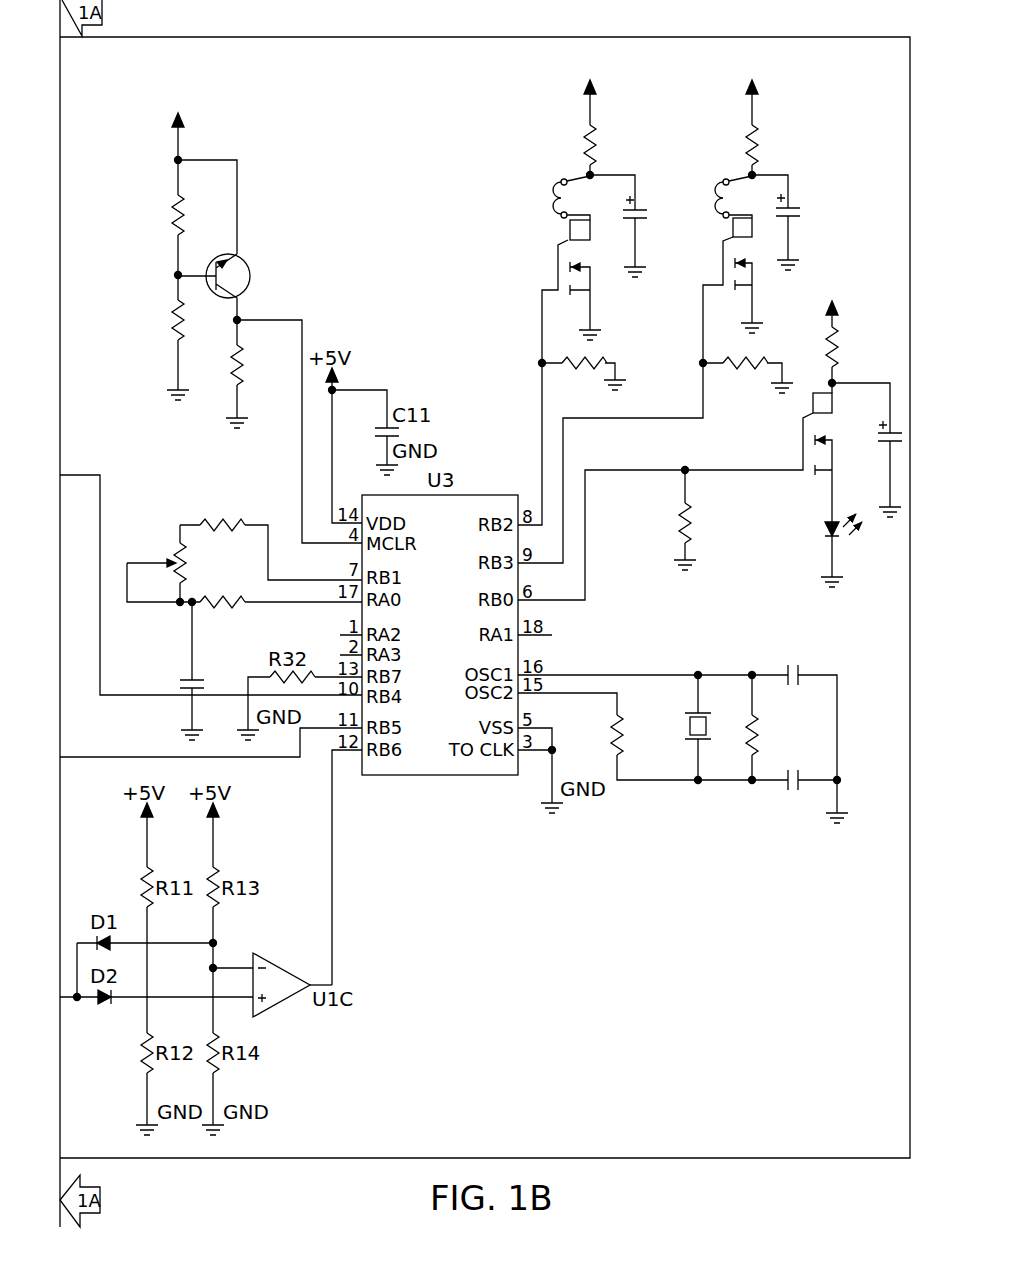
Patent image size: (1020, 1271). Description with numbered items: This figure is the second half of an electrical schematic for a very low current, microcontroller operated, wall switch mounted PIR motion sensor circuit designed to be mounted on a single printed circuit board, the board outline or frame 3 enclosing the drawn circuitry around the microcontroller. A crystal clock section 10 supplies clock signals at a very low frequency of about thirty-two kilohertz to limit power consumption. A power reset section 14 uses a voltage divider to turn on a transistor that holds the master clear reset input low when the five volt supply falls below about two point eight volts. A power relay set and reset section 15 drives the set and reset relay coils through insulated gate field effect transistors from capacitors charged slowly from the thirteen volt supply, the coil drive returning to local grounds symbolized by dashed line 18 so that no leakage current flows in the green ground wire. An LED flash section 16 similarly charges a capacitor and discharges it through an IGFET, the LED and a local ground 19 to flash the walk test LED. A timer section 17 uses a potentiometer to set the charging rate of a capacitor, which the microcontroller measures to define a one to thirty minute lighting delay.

The circuit board / schematic frame 3 is at (686, 1158).
The crystal clock section 10 is at (726, 806).
The power reset section 14 is at (132, 243).
The power relay set and reset section 15 is at (714, 114).
The LED flash section 16 is at (765, 443).
The timer section 17 is at (228, 490).
The dashed line 18 is at (622, 288).
The local ground 19 is at (872, 529).